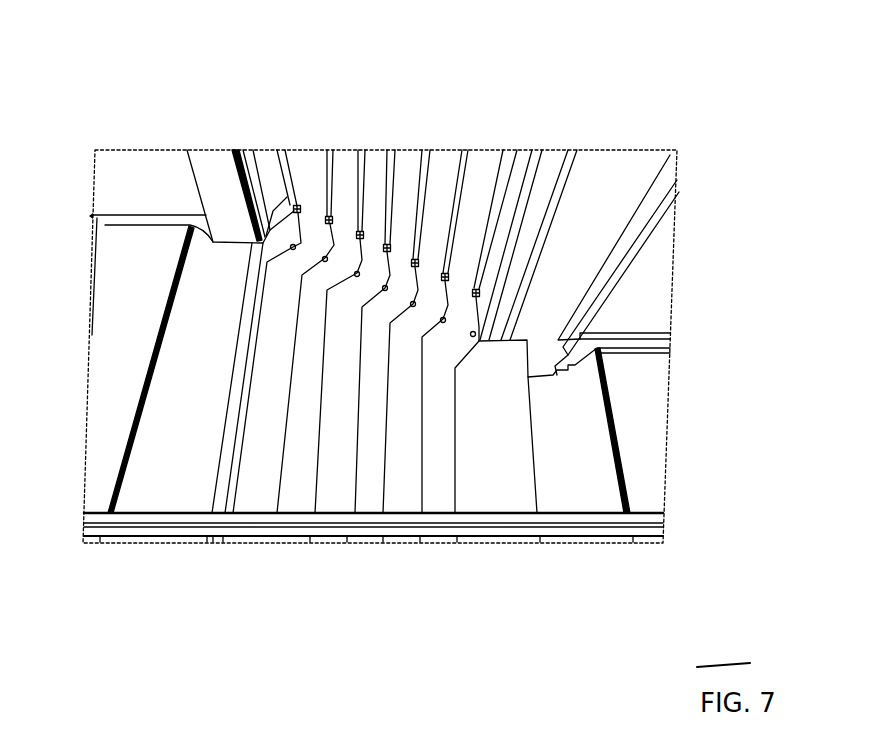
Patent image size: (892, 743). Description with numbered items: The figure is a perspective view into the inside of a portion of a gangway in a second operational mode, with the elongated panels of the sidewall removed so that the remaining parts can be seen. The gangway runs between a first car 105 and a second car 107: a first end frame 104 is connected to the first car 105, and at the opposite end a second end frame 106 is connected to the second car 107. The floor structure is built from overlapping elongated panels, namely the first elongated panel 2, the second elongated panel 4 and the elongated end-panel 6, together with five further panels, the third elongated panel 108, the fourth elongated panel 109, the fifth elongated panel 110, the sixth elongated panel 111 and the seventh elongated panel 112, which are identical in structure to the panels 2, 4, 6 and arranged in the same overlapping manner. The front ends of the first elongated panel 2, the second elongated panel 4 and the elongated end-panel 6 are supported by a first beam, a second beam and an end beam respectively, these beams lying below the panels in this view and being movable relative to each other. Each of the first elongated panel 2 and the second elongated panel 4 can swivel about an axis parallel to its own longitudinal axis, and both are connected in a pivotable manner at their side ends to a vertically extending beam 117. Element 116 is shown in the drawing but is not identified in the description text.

The first elongated panel 2 is at (398, 497).
The second elongated panel 4 is at (437, 490).
The elongated end-panel 6 is at (488, 498).
The first end frame 104 is at (578, 273).
The first car 105 is at (643, 235).
The second end frame 106 is at (218, 172).
The second car 107 is at (143, 180).
The third elongated panel 108 is at (367, 492).
The fourth elongated panel 109 is at (332, 490).
The fifth elongated panel 110 is at (293, 493).
The sixth elongated panel 111 is at (253, 495).
The seventh elongated panel 112 is at (228, 498).
The bar 116 is at (158, 493).
The vertically extending beam 117 is at (463, 160).